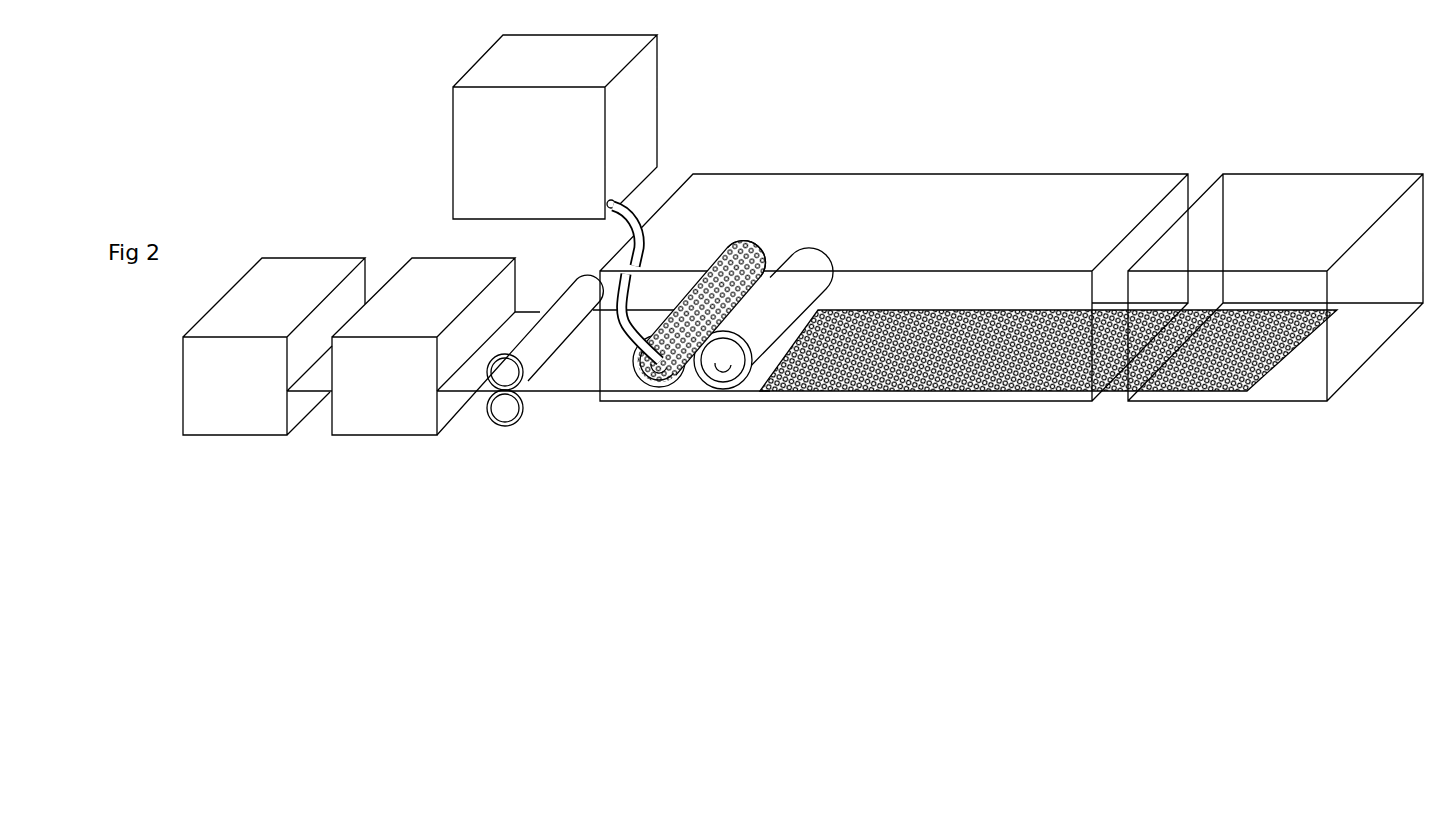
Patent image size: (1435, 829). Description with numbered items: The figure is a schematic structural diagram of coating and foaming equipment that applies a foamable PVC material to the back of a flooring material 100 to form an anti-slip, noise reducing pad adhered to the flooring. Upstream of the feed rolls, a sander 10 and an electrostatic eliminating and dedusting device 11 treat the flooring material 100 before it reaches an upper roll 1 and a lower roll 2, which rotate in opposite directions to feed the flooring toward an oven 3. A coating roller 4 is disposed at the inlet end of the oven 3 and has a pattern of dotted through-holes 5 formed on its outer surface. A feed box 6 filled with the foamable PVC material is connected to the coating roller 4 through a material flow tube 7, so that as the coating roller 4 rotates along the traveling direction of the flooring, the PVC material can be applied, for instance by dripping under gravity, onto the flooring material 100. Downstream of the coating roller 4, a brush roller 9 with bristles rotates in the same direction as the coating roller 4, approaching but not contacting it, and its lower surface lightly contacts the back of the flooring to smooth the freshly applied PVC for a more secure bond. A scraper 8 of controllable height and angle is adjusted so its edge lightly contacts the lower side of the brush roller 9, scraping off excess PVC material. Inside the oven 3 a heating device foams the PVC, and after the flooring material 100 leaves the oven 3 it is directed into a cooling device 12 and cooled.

The upper roll 1 is at (512, 370).
The lower roll 2 is at (507, 413).
The oven 3 is at (933, 190).
The coating roller 4 is at (762, 260).
The dotted through-holes 5 is at (745, 247).
The feed box 6 is at (633, 122).
The material flow tube 7 is at (632, 215).
The scraper 8 is at (692, 377).
The brush roller 9 is at (813, 260).
The sander 10 is at (332, 264).
The electrostatic eliminating and dedusting device 11 is at (447, 282).
The cooling device 12 is at (1273, 190).
The flooring material 100 is at (947, 320).